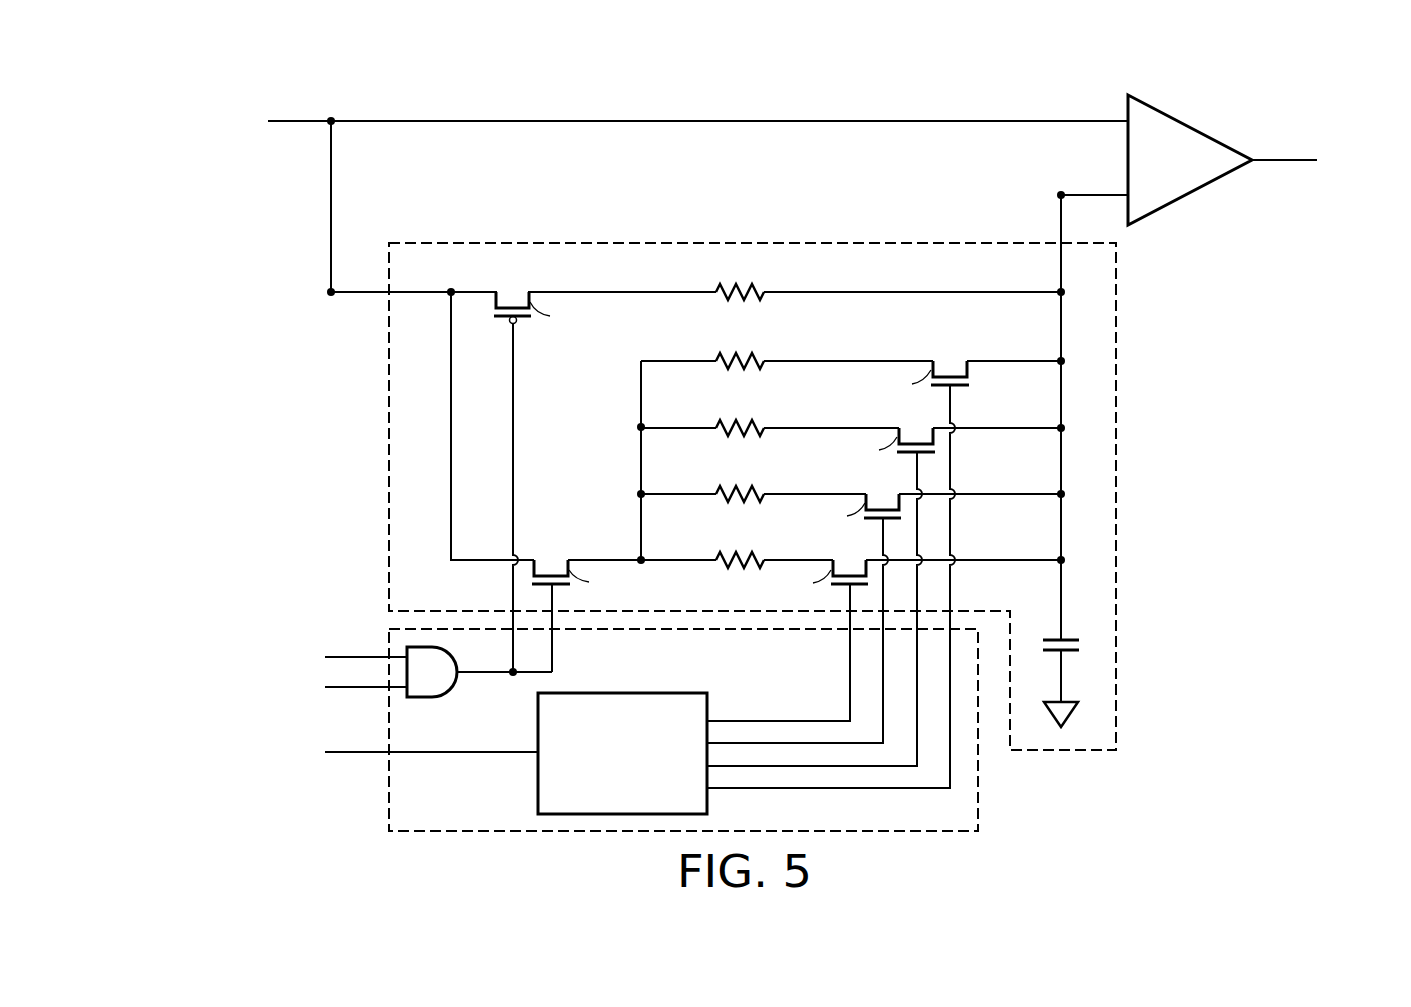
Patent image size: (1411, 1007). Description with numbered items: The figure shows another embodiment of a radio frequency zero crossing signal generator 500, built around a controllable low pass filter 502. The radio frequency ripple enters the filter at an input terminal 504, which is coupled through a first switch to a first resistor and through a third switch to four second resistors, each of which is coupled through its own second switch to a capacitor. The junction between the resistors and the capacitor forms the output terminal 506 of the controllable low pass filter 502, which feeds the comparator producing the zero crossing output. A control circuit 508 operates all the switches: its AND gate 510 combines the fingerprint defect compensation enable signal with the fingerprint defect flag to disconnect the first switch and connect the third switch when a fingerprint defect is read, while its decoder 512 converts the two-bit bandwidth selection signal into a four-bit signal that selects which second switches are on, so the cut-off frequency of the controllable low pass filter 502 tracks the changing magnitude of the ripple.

The radio frequency zero crossing signal generator 500 is at (170, 91).
The controllable low pass filter 502 is at (389, 427).
The input terminal 504 is at (331, 292).
The output terminal 506 is at (1061, 195).
The control circuit 508 is at (389, 815).
The AND gate 510 is at (457, 690).
The decoder 512 is at (624, 693).